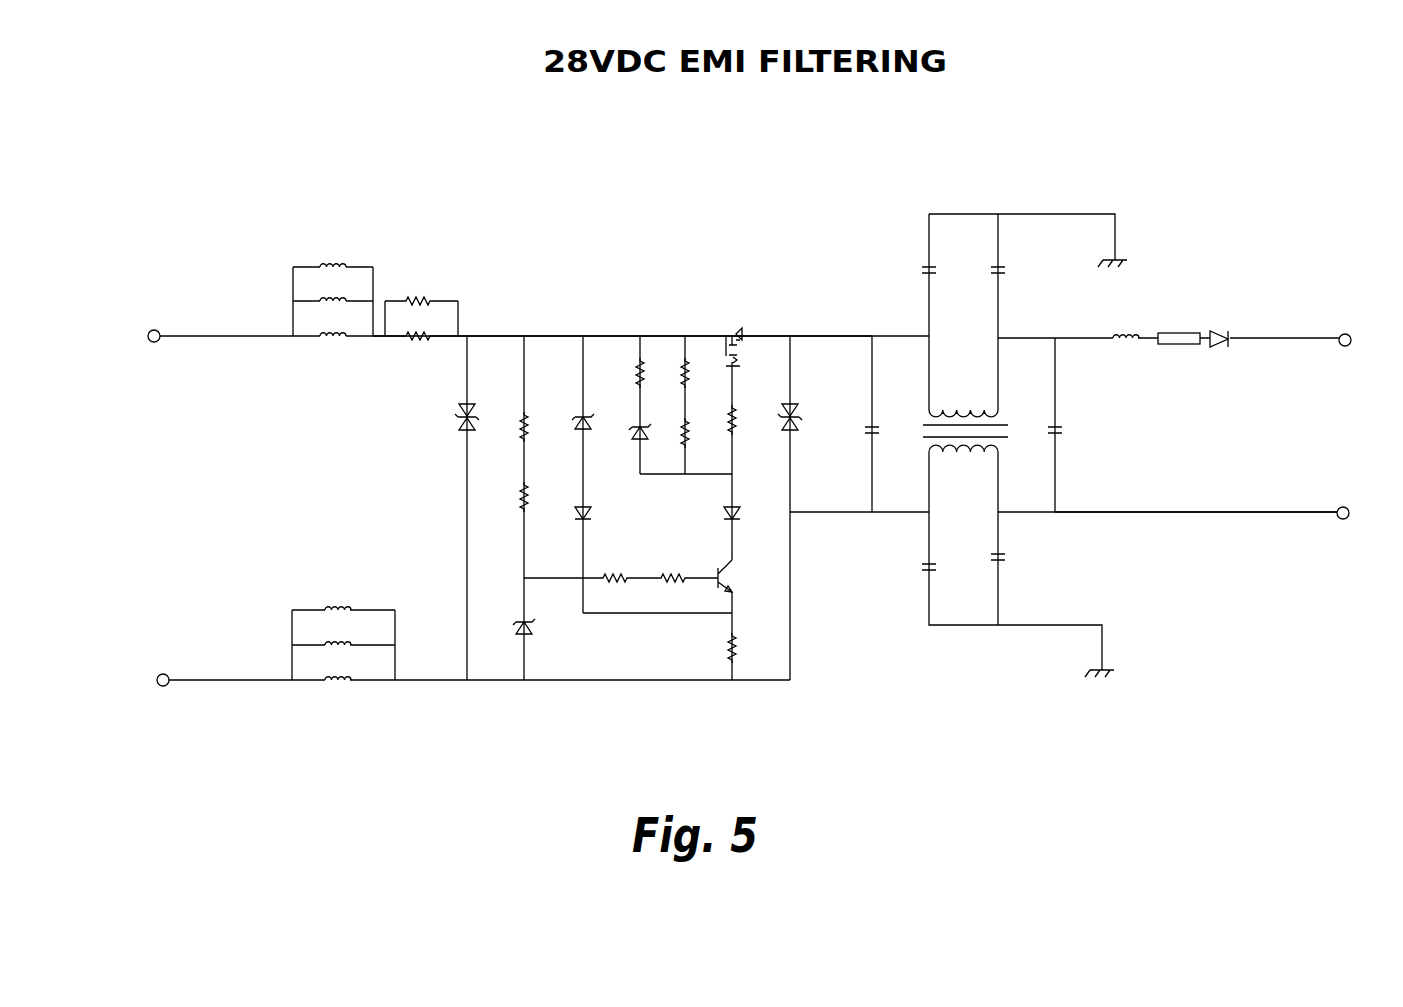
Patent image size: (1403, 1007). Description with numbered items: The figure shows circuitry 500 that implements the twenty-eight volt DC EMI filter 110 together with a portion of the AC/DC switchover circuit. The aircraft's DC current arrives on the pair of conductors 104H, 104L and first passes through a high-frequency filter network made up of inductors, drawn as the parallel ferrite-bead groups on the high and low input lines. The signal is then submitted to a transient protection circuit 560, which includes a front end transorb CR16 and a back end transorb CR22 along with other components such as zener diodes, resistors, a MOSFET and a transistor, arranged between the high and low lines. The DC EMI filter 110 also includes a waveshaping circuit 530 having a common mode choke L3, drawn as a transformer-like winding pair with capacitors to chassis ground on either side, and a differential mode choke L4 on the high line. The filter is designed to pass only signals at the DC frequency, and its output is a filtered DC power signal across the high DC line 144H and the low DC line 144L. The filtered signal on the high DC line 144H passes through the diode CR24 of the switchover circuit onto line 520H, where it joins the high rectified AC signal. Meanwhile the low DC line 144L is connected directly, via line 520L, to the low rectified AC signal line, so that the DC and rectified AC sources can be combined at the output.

The circuitry 500 is at (1360, 110).
The high DC input conductor 104H is at (147, 335).
The low DC input conductor 104L is at (157, 679).
The 28 VDC EMI filter 110 is at (553, 292).
The transient protection circuit 560 is at (790, 690).
The front end transorb CR16 is at (462, 408).
The back end transorb CR22 is at (796, 428).
The waveshaping circuit 530 is at (1033, 296).
The common mode choke L3 is at (985, 405).
The differential mode choke L4 is at (1122, 346).
The high DC line 144H is at (1201, 335).
The low DC line 144L is at (1211, 516).
The diode CR24 is at (1217, 350).
The high output line 520H is at (1346, 330).
The low output line 520L is at (1343, 521).